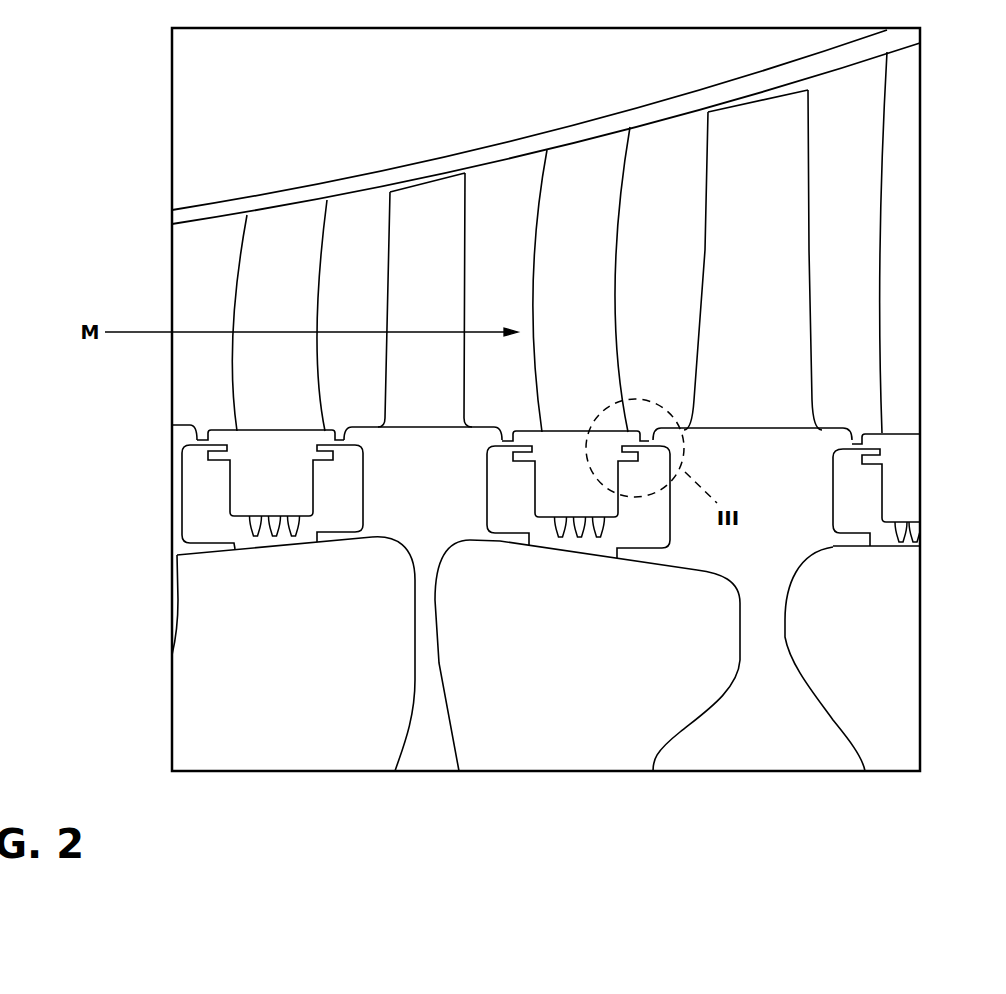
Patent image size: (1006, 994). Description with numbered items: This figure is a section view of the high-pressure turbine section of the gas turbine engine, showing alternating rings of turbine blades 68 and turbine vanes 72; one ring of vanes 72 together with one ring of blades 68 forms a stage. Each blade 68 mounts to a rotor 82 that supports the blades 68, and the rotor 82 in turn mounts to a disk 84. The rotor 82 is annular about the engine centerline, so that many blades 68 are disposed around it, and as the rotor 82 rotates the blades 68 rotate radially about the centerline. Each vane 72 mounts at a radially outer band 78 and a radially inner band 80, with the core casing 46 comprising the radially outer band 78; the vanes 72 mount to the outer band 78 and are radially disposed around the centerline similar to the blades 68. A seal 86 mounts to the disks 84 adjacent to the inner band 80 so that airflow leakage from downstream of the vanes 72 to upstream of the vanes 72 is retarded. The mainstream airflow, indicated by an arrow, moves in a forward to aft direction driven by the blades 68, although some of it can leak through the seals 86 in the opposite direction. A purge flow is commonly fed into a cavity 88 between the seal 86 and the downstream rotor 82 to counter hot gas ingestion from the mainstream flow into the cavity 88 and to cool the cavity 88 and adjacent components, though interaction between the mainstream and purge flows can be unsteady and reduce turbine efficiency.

The core casing 46 is at (391, 160).
The turbine blade 68 is at (417, 298).
The turbine vane 72 is at (268, 313).
The radially outer band 78 is at (302, 187).
The radially inner band 80 is at (262, 445).
The rotor 82 is at (405, 477).
The disk 84 is at (700, 742).
The seal 86 is at (303, 553).
The cavity 88 is at (323, 514).